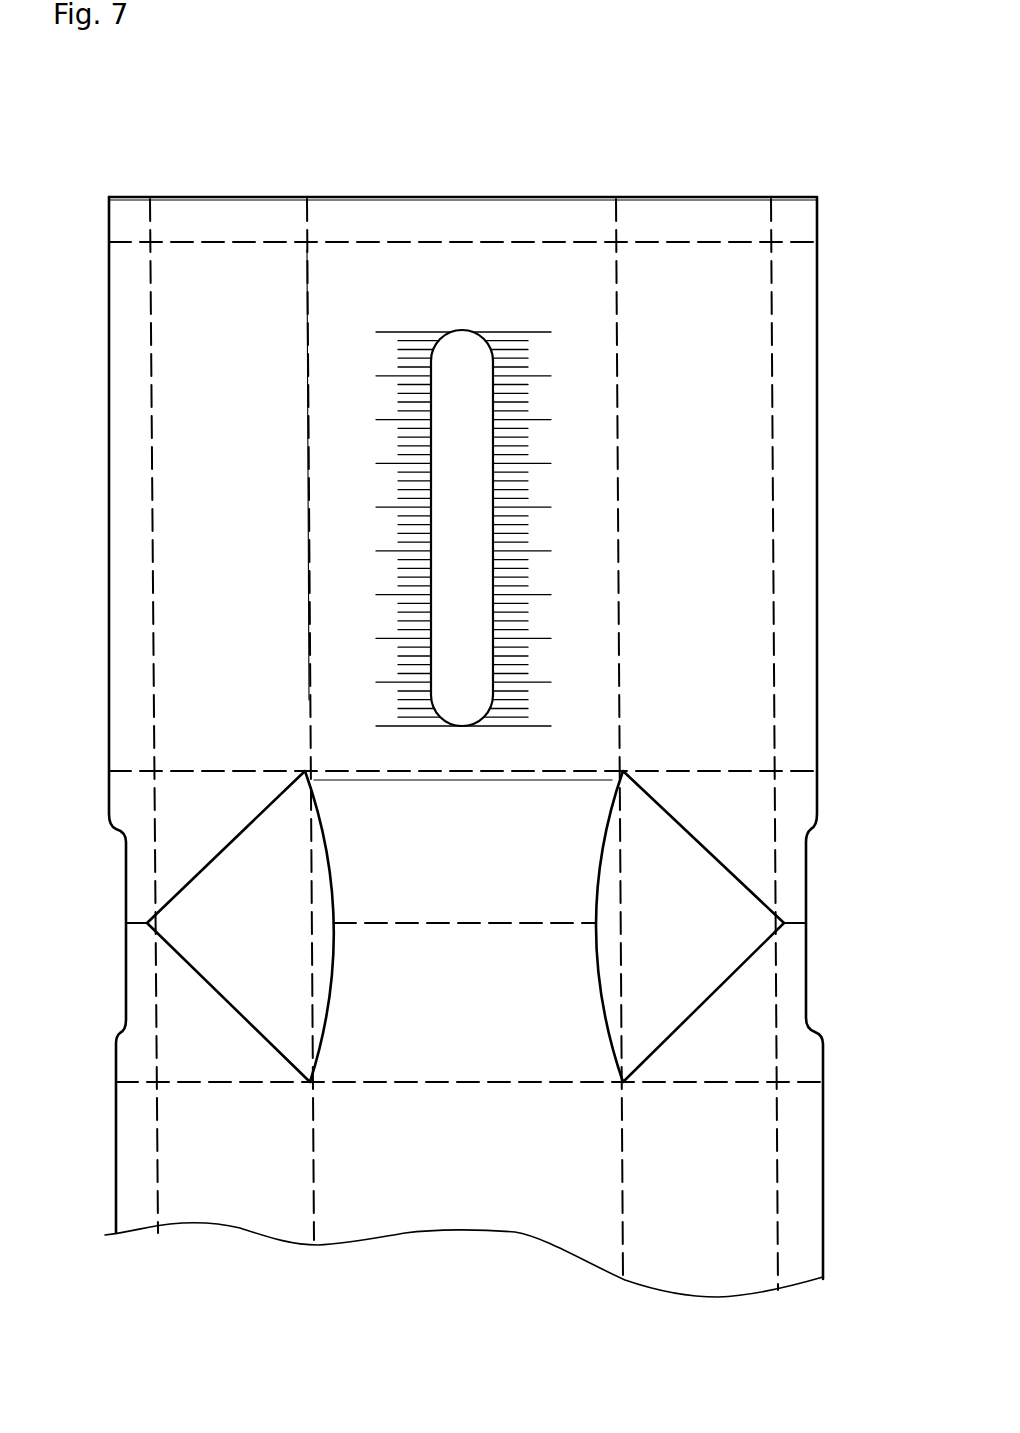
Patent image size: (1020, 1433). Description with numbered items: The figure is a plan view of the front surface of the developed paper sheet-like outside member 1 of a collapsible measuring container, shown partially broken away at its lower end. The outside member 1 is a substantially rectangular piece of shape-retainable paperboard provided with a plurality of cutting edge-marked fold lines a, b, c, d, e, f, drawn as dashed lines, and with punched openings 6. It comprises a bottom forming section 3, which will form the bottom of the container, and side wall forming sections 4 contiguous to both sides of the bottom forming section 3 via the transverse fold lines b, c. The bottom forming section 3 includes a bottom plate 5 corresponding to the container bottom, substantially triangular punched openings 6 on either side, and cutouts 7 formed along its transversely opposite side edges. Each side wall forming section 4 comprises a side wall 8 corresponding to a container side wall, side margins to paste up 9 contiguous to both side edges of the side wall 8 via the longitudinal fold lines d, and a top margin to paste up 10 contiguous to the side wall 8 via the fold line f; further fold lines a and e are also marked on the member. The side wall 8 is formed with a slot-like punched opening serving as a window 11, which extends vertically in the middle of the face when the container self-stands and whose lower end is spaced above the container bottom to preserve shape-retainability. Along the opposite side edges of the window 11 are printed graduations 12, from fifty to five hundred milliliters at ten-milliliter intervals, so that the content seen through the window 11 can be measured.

The outside member 1 is at (770, 104).
The bottom forming section 3 is at (118, 862).
The side wall forming sections 4 is at (93, 381).
The bottom plate 5 is at (375, 805).
The punched openings 6 is at (697, 876).
The cutouts 7 is at (808, 1000).
The side wall 8 is at (331, 293).
The side margins to paste up 9 is at (118, 262).
The top margins to paste up 10 is at (390, 220).
The window 11 is at (460, 360).
The graduations 12 is at (561, 386).
The cutting edge-marked fold line a is at (418, 925).
The cutting edge-marked fold line b is at (556, 770).
The cutting edge-marked fold line c is at (457, 1085).
The cutting edge-marked fold line d is at (152, 318).
The cutting edge-marked fold line e is at (300, 293).
The cutting edge-marked fold line f is at (712, 242).